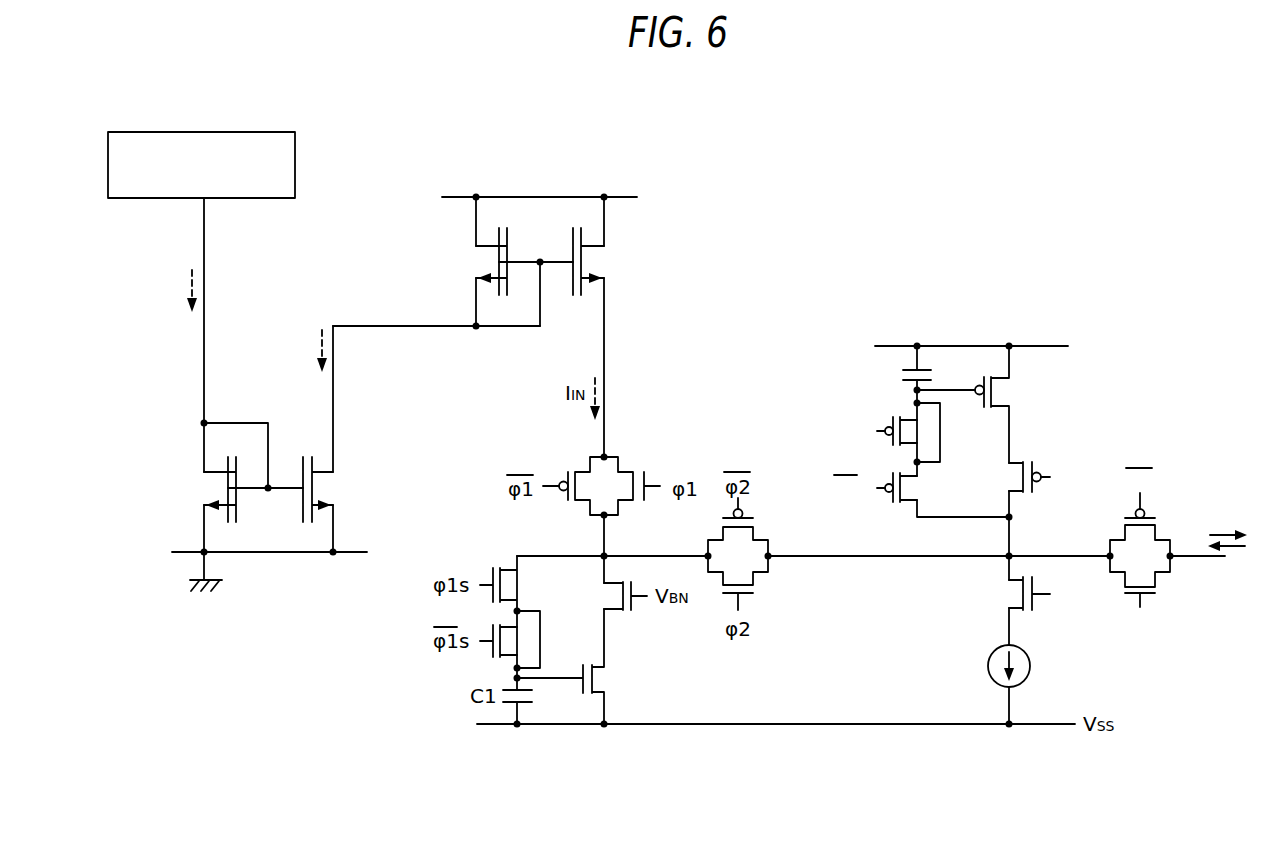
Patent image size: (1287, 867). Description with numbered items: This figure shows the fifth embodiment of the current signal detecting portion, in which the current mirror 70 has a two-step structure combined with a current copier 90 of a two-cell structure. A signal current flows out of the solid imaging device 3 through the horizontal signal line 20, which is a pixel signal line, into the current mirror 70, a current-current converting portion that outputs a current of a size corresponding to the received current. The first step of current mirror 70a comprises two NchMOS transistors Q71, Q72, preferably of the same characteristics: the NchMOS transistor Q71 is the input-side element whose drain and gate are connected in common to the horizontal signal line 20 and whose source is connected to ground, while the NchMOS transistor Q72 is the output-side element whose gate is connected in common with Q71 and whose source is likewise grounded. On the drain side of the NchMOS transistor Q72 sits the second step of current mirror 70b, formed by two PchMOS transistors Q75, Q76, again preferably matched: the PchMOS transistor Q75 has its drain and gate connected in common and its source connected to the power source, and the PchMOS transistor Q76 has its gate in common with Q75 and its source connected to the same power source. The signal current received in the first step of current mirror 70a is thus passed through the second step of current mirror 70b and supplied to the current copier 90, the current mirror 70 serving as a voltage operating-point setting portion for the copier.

The solid imaging device 3 is at (200, 132).
The horizontal signal line 20 is at (204, 370).
The current mirror 70 is at (362, 172).
The first step of current mirror 70a is at (270, 466).
The second step of current mirror 70b is at (506, 299).
The current copier 90 is at (777, 373).
The NchMOS transistor Q71 is at (212, 488).
The NchMOS transistor Q72 is at (333, 488).
The PchMOS transistor Q75 is at (482, 262).
The PchMOS transistor Q76 is at (598, 262).